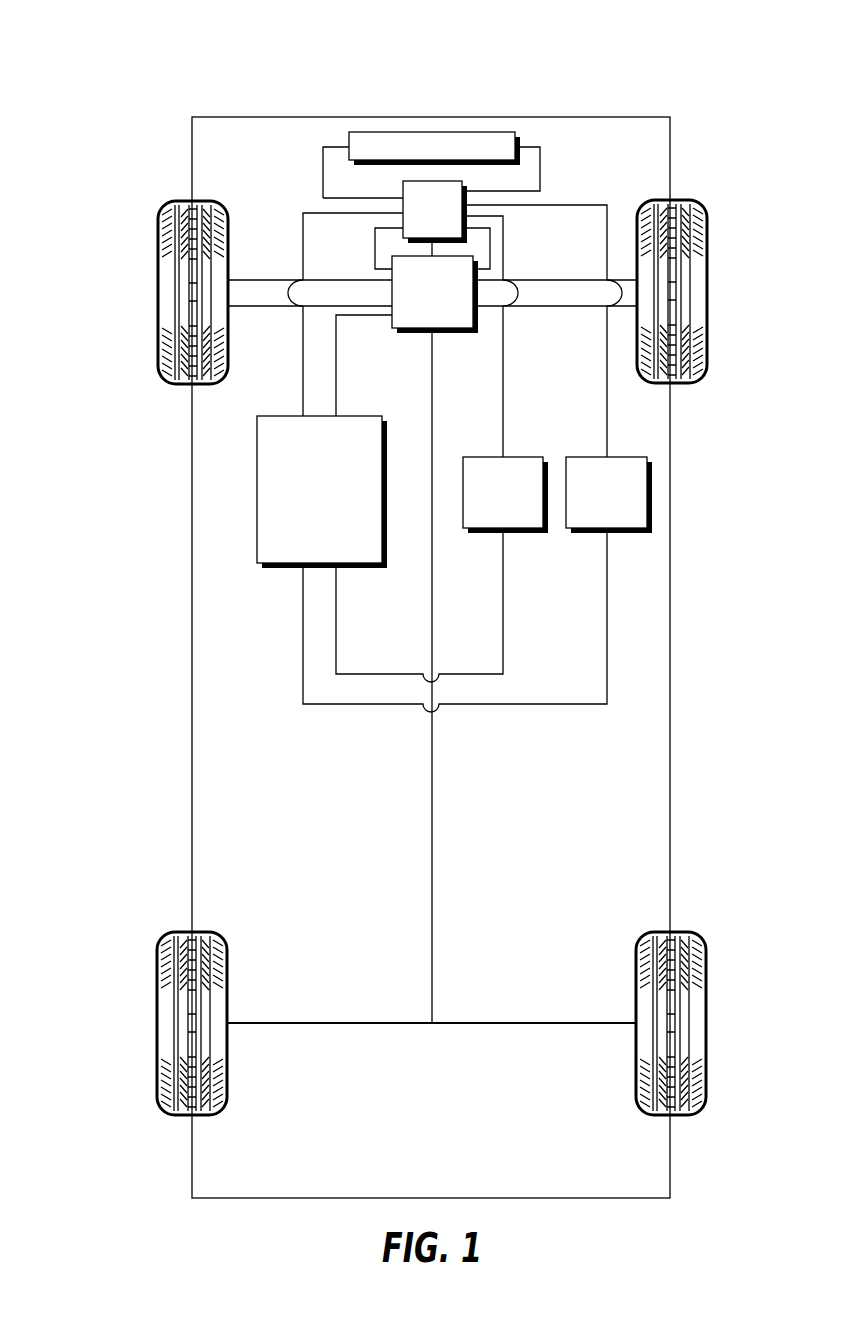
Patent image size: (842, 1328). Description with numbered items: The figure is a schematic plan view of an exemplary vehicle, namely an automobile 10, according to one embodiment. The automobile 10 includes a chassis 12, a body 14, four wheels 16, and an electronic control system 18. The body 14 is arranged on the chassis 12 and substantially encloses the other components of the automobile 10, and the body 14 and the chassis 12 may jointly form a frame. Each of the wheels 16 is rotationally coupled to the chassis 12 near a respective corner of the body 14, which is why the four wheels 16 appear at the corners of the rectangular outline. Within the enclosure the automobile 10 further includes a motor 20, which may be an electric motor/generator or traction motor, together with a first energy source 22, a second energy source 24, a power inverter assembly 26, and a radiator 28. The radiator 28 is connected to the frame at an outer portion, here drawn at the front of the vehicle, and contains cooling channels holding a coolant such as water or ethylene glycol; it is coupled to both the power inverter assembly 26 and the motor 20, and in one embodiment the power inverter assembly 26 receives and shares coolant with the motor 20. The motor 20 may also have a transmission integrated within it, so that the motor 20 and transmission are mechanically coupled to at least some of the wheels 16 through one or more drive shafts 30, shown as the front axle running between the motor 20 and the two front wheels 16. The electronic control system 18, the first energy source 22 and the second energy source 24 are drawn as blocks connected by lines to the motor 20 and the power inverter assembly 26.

The automobile 10 is at (692, 40).
The chassis 12 is at (430, 898).
The body 14 is at (207, 490).
The wheels 16 is at (158, 262).
The electronic control system 18 is at (308, 502).
The motor 20 is at (420, 306).
The first energy source 22 is at (491, 504).
The second energy source 24 is at (595, 504).
The power inverter assembly 26 is at (420, 223).
The radiator 28 is at (383, 132).
The drive shafts 30 is at (286, 280).